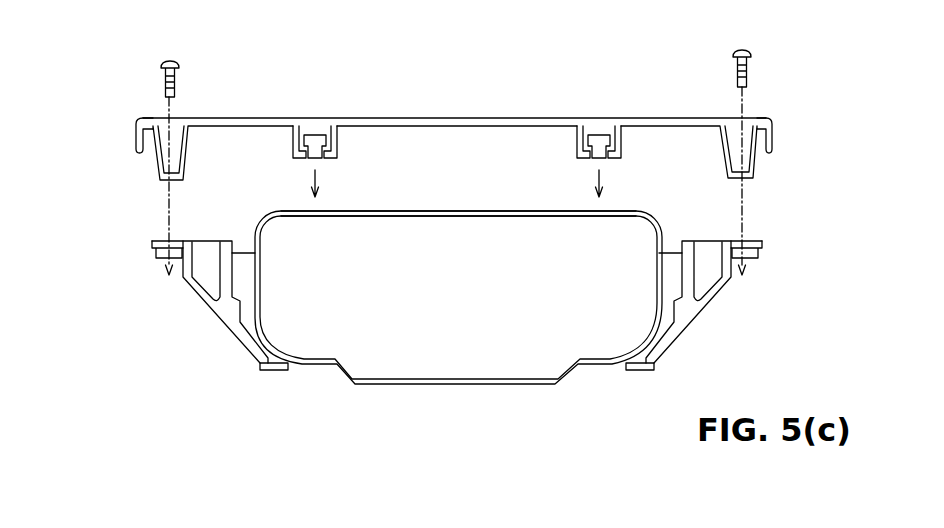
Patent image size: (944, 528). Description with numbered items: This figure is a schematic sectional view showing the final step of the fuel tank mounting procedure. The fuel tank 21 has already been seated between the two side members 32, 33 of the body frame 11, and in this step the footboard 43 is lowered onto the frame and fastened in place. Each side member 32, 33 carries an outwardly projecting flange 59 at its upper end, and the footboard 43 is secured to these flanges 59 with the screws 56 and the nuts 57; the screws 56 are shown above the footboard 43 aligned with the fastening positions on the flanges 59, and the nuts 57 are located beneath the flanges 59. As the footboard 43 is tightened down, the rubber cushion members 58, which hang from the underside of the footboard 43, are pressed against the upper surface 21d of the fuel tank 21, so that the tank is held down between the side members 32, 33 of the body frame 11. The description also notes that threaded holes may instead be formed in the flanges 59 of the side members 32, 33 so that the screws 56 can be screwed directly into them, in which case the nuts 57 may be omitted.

The body frame 11 is at (187, 302).
The fuel tank 21 is at (396, 391).
The upper surface 21d is at (463, 210).
The side member 32 is at (222, 341).
The side member 33 is at (706, 322).
The footboard 43 is at (460, 117).
The screw 56 is at (163, 63).
The nut 57 is at (157, 253).
The rubber cushion member 58 is at (315, 133).
The flange 59 is at (152, 240).